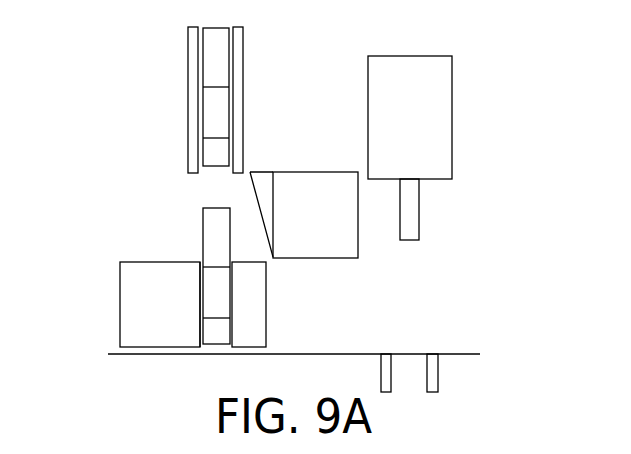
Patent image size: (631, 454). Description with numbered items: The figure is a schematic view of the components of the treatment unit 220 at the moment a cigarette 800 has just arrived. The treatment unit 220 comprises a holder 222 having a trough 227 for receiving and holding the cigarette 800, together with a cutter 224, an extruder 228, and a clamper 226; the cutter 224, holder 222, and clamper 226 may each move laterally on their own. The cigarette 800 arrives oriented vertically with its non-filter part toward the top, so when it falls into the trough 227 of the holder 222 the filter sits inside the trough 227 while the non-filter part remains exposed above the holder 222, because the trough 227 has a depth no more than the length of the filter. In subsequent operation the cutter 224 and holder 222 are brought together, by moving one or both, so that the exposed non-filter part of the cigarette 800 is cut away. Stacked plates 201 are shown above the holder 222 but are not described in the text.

The stacked plate assembly 201 is at (195, 98).
The cutter 224 is at (313, 172).
The extruder 228 is at (441, 117).
The holder 222 is at (130, 287).
The cigarette 800 is at (212, 233).
The trough 227 is at (198, 318).
The treatment unit 220 is at (533, 367).
The clamper 226 is at (433, 372).